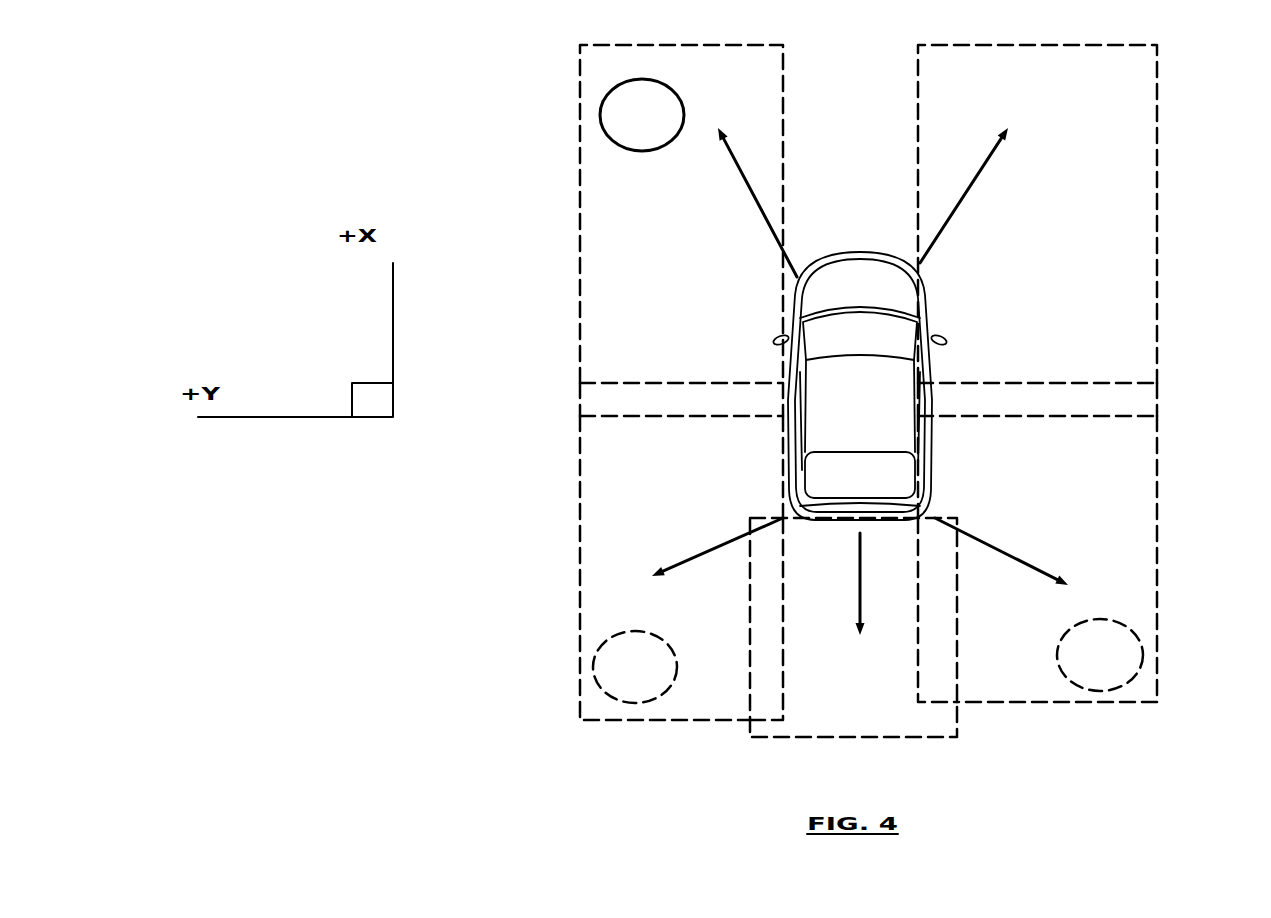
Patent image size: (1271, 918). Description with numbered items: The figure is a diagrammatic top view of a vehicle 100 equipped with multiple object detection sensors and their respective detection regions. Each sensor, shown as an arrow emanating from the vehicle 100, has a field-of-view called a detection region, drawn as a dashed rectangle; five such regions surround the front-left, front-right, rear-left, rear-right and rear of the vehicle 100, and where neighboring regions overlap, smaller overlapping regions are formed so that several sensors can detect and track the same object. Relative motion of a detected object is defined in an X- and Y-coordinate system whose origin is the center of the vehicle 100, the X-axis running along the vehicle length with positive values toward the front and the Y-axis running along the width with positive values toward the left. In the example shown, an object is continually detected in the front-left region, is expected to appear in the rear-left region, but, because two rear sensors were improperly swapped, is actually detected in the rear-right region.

The vehicle 100 is at (858, 248).